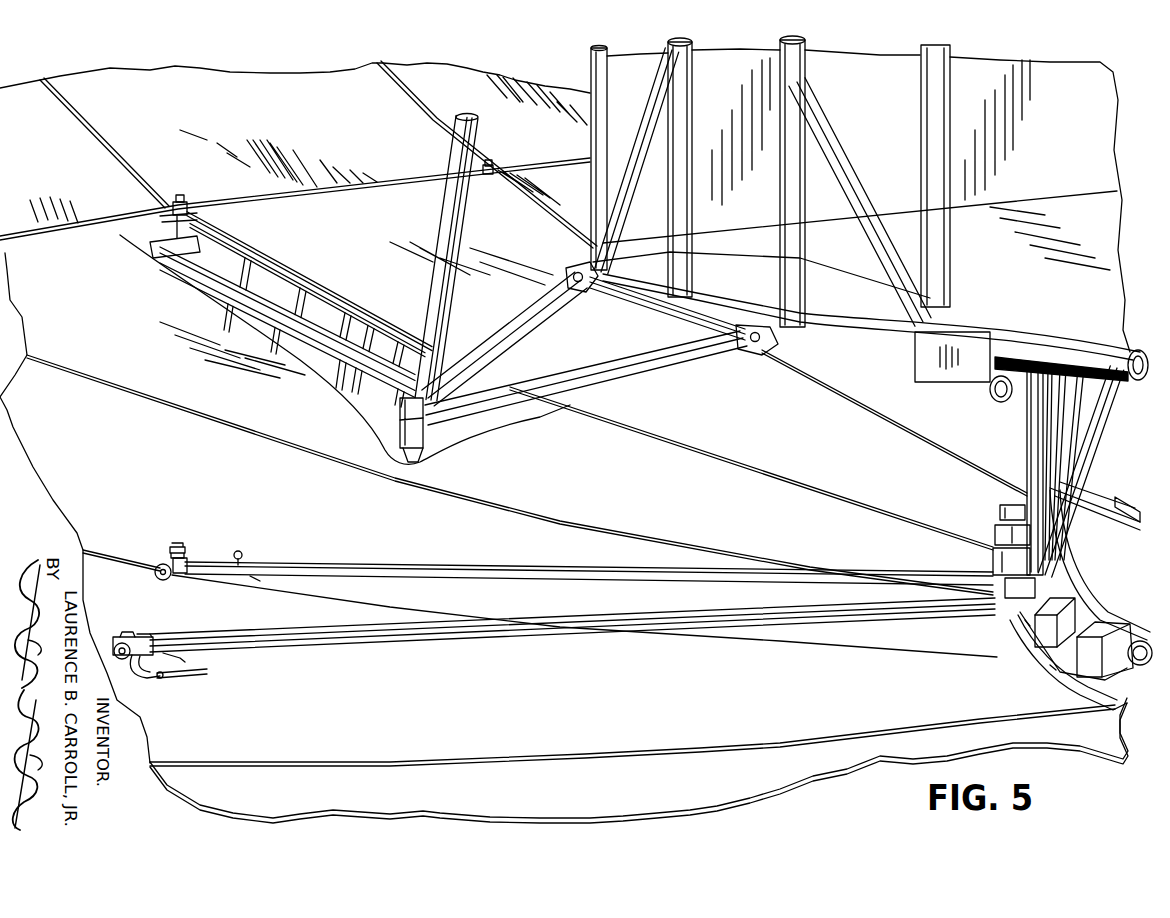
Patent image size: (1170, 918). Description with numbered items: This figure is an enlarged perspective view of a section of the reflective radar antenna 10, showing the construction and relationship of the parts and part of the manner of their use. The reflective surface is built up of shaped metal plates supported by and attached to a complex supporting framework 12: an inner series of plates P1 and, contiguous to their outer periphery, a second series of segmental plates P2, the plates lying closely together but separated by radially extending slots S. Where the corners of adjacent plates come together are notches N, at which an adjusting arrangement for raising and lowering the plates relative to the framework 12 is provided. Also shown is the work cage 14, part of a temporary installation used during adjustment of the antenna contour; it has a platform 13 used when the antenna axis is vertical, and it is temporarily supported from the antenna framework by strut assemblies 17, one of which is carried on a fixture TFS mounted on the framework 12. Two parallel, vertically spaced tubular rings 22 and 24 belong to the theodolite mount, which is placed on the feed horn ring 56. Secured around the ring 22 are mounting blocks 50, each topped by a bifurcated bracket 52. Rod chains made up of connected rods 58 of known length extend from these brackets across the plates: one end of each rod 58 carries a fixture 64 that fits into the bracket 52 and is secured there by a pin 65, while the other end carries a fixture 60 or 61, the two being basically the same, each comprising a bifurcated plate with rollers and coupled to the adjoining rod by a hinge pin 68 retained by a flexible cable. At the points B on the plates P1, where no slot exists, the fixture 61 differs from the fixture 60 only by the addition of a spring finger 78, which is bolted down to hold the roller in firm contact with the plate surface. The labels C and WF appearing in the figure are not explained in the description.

The reflective radar antenna 10 is at (506, 73).
The supporting framework 12 is at (337, 315).
The platform 13 is at (984, 260).
The work cage 14 is at (650, 311).
The strut assemblies 17 is at (452, 217).
The ring 22 is at (1066, 591).
The ring 24 is at (1120, 372).
The mounting blocks 50 is at (1037, 638).
The bifurcated bracket 52 is at (1106, 645).
The feed horn ring 56 is at (1120, 700).
The rod 58 is at (528, 565).
The fixture 60 is at (181, 549).
The fixture 61 is at (140, 636).
The fixture 64 is at (1048, 579).
The pin 65 is at (1080, 618).
The pin 68 is at (184, 674).
The spring finger 78 is at (182, 660).
The inner series of plates P1 is at (939, 435).
The second series of segmental plates P2 is at (6, 167).
The radially extending slots S is at (408, 178).
The clamp C is at (496, 171).
The notches N is at (485, 167).
The points B is at (158, 567).
The fixture TFS is at (395, 420).
The wall frame WF is at (852, 93).